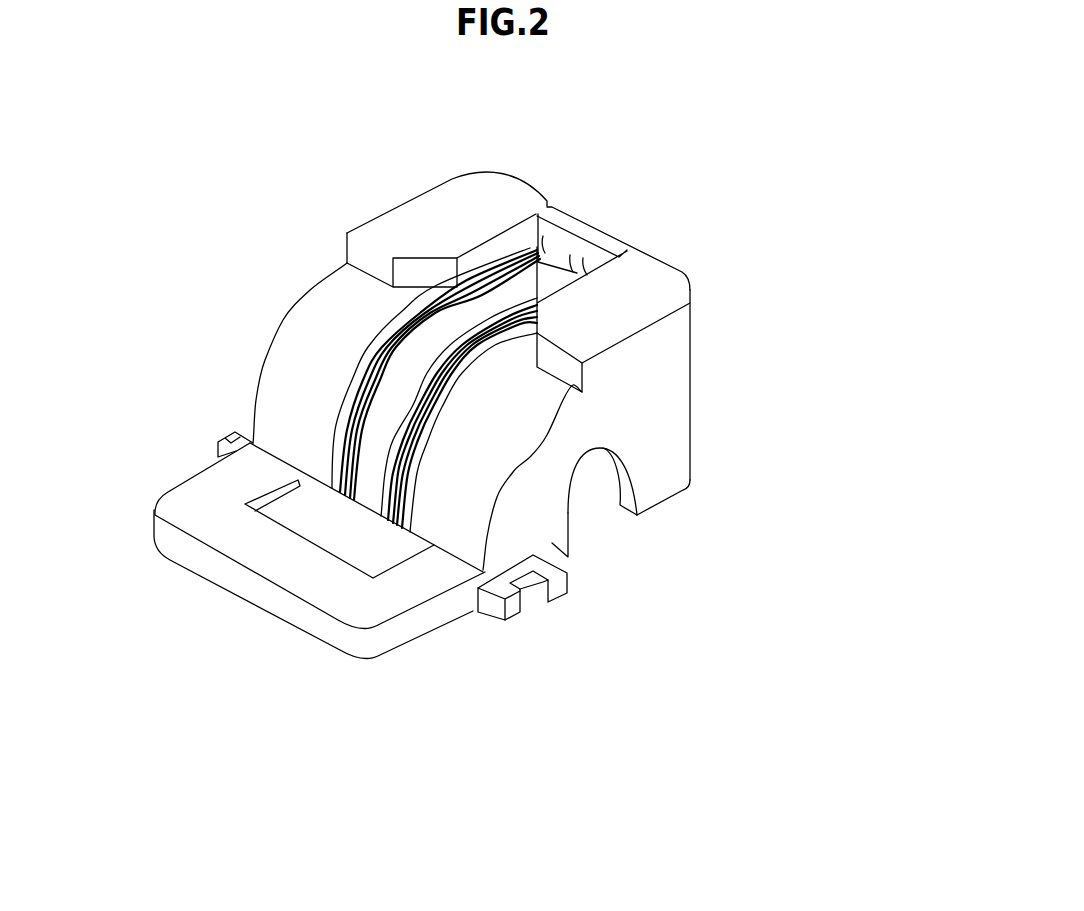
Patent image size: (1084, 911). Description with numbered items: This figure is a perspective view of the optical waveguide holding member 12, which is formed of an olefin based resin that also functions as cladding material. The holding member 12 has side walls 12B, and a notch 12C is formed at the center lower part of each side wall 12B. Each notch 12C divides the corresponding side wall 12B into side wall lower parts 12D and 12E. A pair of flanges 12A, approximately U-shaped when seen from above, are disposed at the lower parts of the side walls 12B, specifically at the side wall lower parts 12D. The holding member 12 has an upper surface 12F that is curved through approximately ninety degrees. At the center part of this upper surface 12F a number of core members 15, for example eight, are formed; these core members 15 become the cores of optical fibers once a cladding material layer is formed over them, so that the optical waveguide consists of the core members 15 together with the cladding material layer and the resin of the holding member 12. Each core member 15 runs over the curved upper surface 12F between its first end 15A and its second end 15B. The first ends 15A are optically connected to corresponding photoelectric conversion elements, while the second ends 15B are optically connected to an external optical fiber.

The optical waveguide holding member 12 is at (667, 338).
The flanges 12A is at (232, 442).
The side walls 12B is at (643, 408).
The notches 12C is at (600, 512).
The side wall lower part 12D is at (583, 558).
The side wall lower part 12E is at (663, 487).
The upper surface 12F is at (293, 370).
The core members 15 is at (377, 363).
The first ends 15A is at (380, 462).
The second ends 15B is at (552, 257).